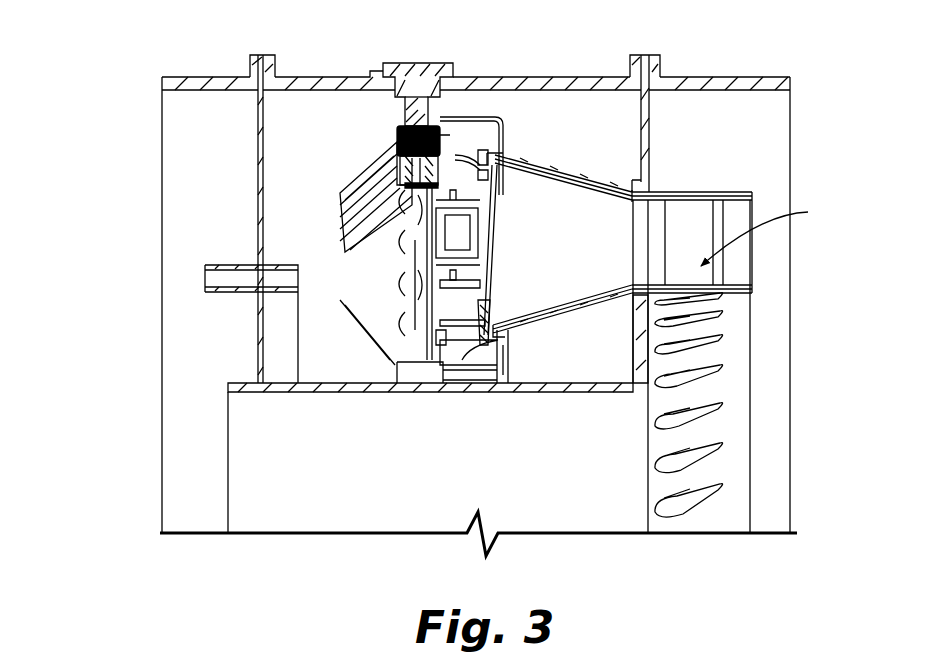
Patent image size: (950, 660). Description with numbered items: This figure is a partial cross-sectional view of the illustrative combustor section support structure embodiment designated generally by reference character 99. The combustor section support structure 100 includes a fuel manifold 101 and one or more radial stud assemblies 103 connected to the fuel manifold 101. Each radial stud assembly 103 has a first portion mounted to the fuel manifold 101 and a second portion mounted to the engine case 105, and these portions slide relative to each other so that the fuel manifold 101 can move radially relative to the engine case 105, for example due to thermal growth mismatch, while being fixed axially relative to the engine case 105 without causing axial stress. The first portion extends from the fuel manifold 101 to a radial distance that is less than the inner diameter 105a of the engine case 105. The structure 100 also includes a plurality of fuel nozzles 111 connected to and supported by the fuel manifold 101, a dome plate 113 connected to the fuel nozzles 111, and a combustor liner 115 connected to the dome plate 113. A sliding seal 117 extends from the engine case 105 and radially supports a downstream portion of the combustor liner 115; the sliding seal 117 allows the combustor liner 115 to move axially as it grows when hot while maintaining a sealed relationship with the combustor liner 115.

The combustor section support structure embodiment 99 is at (54, 53).
The combustor section support structure 100 is at (323, 60).
The fuel manifold 101 is at (393, 143).
The radial stud assembly 103 is at (380, 72).
The engine case 105 is at (523, 86).
The inner diameter of engine case 105a is at (190, 218).
The fuel nozzle 111 is at (462, 305).
The dome plate 113 is at (480, 218).
The combustor liner 115 is at (583, 172).
The sliding seal 117 is at (679, 175).